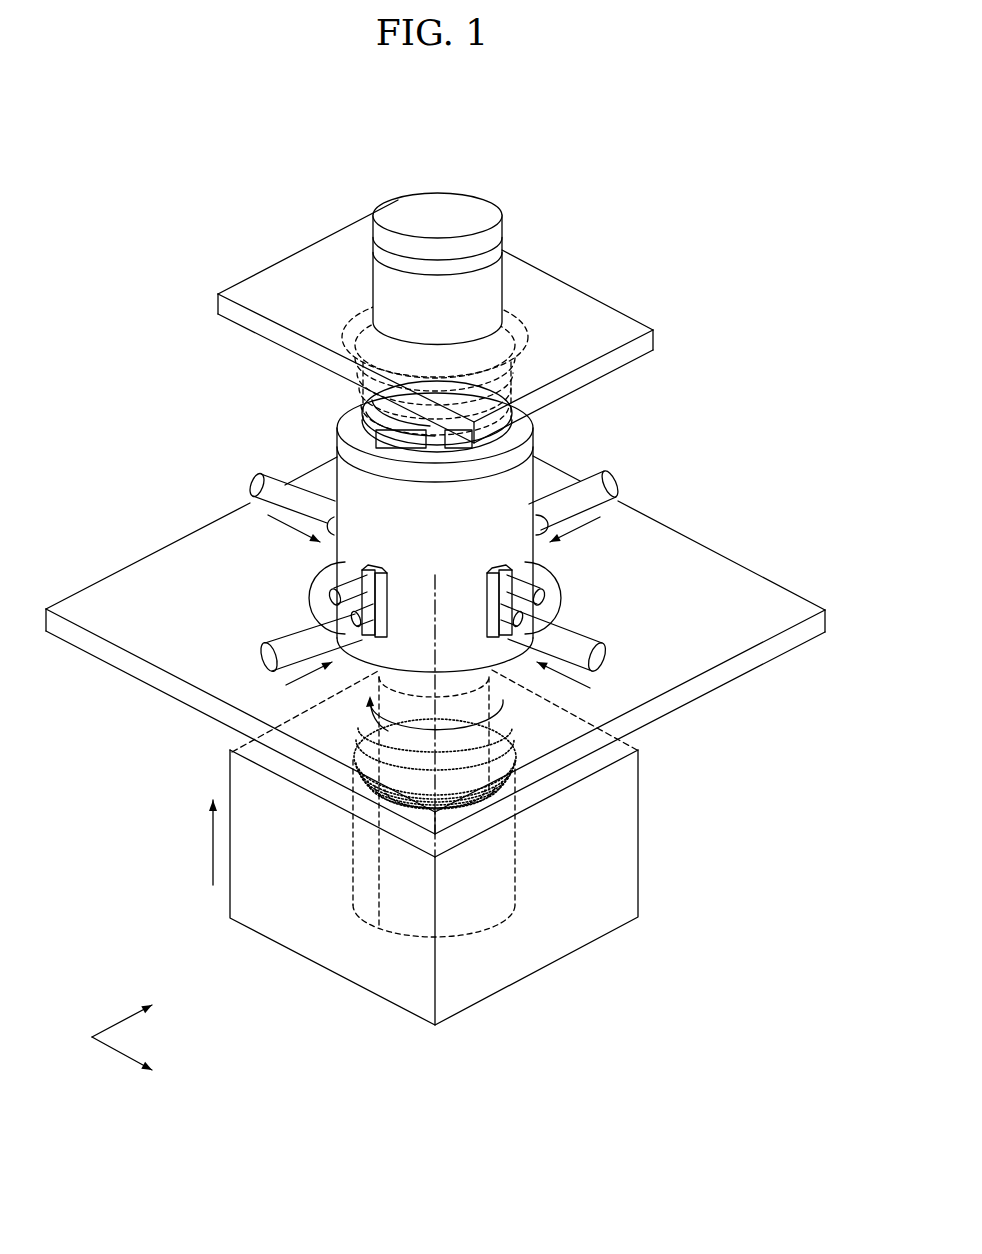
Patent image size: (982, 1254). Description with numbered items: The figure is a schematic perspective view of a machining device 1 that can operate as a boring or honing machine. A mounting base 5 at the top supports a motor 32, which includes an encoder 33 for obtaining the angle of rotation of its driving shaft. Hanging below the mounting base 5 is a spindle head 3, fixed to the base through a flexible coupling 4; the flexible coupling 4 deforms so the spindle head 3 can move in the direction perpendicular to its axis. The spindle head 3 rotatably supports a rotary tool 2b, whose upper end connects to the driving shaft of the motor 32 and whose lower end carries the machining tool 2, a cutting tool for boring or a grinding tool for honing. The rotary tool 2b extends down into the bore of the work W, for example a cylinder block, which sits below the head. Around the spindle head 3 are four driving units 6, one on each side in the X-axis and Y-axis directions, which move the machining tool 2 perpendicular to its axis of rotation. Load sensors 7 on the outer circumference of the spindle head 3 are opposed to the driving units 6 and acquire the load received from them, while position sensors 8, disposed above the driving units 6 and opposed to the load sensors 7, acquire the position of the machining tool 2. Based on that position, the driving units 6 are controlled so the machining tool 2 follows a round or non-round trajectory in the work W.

The machining device 1 is at (688, 187).
The machining tool 2 is at (493, 793).
The rotary tool 2b is at (382, 930).
The spindle head 3 is at (365, 497).
The motor 32 is at (483, 283).
The encoder 33 is at (462, 212).
The flexible coupling 4 is at (366, 414).
The mounting base 5 is at (285, 273).
The driving units 6 is at (270, 480).
The load sensors 7 is at (330, 545).
The position sensors 8 is at (362, 569).
The work W is at (617, 853).